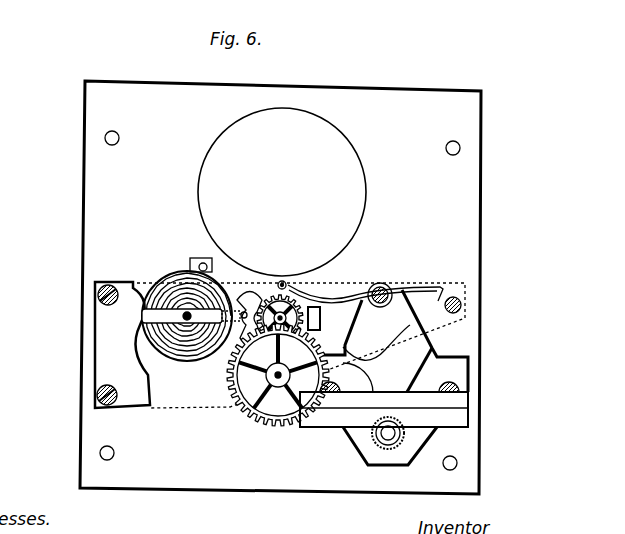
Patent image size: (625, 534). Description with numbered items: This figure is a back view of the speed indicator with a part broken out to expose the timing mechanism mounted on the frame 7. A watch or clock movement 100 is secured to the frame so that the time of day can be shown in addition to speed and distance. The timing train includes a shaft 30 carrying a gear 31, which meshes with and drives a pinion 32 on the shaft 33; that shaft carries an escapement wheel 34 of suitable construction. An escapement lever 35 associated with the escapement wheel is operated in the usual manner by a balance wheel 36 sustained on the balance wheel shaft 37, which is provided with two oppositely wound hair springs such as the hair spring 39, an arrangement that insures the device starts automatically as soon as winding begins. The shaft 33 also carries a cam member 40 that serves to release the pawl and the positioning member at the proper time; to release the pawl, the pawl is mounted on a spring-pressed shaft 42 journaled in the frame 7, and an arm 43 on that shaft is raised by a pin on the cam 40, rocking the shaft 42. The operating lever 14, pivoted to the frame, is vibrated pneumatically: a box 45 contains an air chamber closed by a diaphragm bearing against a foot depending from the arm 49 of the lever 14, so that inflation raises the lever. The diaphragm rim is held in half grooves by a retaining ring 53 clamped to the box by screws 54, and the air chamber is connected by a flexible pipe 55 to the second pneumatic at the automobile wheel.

The frame 7 is at (472, 246).
The watch or clock movement 100 is at (300, 130).
The operating lever 14 is at (343, 352).
The shaft 30 is at (283, 397).
The gear 31 is at (258, 405).
The pinion 32 is at (292, 282).
The shaft 33 is at (278, 314).
The escapement wheel 34 is at (305, 300).
The escapement lever 35 is at (233, 285).
The balance wheel 36 is at (158, 283).
The balance wheel shaft 37 is at (187, 322).
The hair spring 39 is at (147, 332).
The cam member 40 is at (300, 318).
The spring-pressed shaft 42 is at (385, 287).
The arm 43 is at (336, 292).
The box 45 is at (417, 438).
The arm 49 is at (393, 385).
The retaining ring 53 is at (455, 402).
The screws 54 is at (500, 368).
The flexible pipe 55 is at (388, 442).